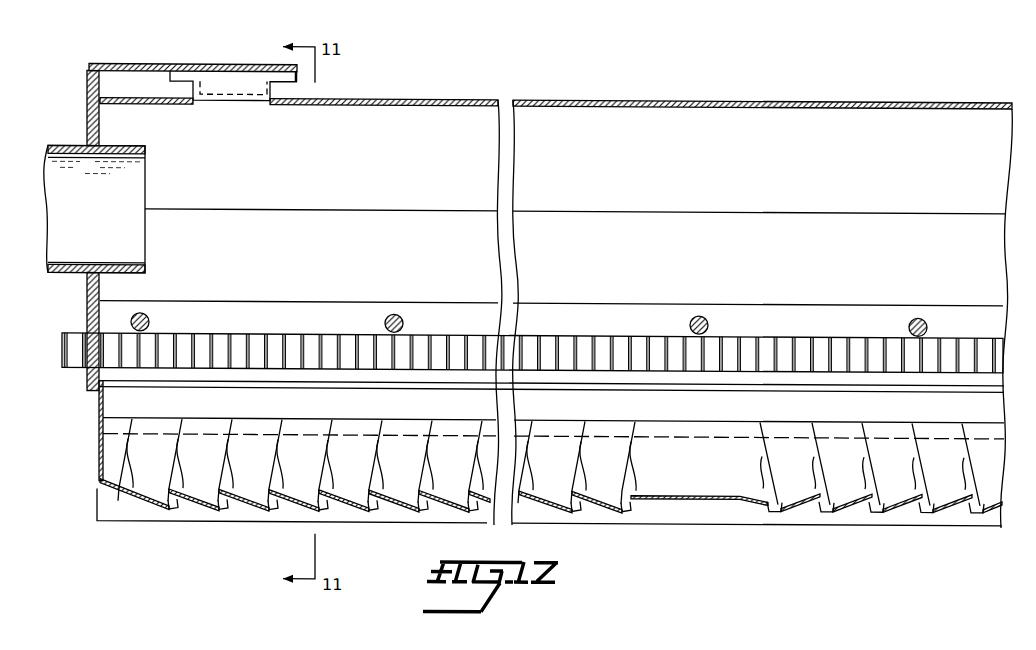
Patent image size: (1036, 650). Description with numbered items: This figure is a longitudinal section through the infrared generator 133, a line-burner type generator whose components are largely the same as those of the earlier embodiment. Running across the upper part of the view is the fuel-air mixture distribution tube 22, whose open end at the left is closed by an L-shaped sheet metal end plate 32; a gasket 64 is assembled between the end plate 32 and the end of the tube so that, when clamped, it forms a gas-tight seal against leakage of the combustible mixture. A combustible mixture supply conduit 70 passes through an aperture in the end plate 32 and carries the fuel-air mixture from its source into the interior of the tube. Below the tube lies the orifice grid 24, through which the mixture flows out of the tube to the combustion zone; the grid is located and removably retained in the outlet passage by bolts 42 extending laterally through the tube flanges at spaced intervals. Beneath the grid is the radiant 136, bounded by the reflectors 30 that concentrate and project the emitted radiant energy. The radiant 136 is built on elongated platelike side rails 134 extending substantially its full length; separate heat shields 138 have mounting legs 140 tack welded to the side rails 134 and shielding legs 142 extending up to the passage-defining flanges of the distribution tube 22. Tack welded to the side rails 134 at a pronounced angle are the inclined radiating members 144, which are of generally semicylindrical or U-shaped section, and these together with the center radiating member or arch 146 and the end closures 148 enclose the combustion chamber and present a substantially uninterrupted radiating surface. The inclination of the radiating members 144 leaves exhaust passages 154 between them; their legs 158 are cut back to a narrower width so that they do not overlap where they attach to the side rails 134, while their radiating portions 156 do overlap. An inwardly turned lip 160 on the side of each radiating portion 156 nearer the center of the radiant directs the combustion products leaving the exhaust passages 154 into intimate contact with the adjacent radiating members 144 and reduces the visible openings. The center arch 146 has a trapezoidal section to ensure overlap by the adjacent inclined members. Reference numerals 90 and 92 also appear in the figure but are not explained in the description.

The fuel-air mixture distribution tube 22 is at (427, 109).
The infrared generator 133 is at (599, 91).
The gasket 64 is at (89, 72).
The end plate 32 is at (88, 120).
The combustible mixture supply conduit 70 is at (68, 272).
The orifice grid 24 is at (62, 351).
The bolt 42 is at (709, 320).
The shielding leg 142 is at (184, 378).
The mounting leg 140 is at (240, 408).
The heat shield 138 is at (258, 411).
The side rail 134 is at (118, 427).
The end closure 148 is at (97, 491).
The reflector 30 is at (155, 521).
The exhaust passage 154 is at (270, 491).
The louver 90 is at (276, 512).
The inclined radiating member 144 is at (347, 505).
The inwardly turned lip 160 is at (418, 499).
The leg 158 is at (400, 421).
The radiating portion 156 is at (450, 509).
The radiant 136 is at (579, 512).
The center radiating member or arch 146 is at (706, 496).
The louver 92 is at (803, 509).